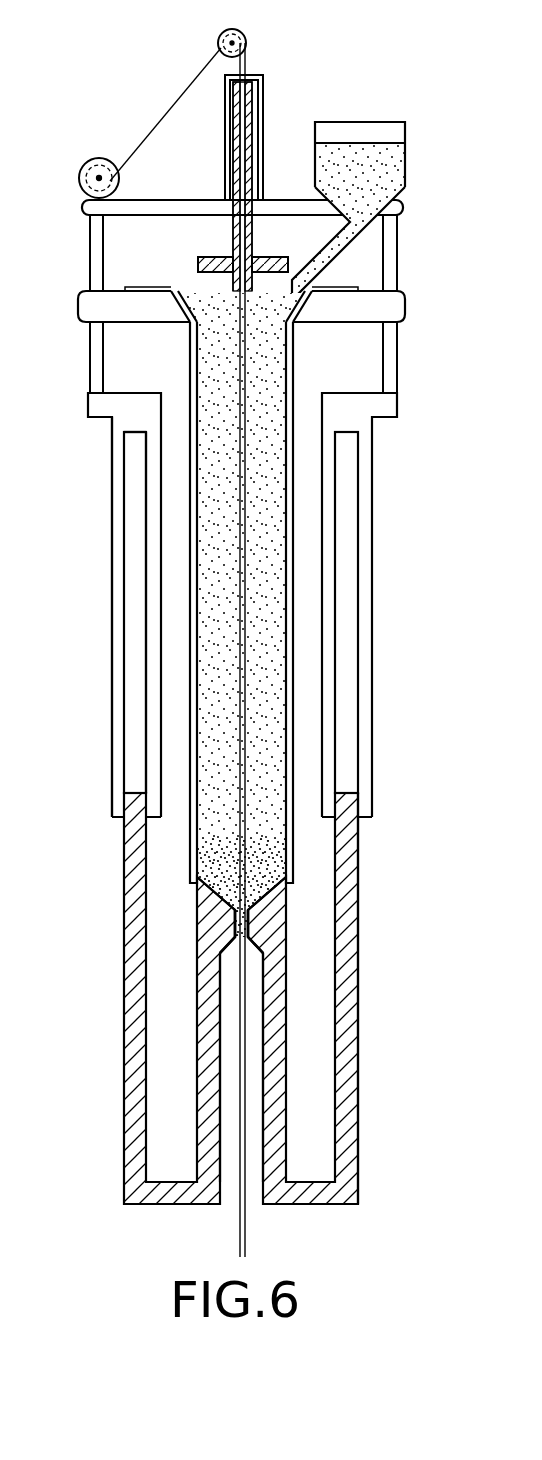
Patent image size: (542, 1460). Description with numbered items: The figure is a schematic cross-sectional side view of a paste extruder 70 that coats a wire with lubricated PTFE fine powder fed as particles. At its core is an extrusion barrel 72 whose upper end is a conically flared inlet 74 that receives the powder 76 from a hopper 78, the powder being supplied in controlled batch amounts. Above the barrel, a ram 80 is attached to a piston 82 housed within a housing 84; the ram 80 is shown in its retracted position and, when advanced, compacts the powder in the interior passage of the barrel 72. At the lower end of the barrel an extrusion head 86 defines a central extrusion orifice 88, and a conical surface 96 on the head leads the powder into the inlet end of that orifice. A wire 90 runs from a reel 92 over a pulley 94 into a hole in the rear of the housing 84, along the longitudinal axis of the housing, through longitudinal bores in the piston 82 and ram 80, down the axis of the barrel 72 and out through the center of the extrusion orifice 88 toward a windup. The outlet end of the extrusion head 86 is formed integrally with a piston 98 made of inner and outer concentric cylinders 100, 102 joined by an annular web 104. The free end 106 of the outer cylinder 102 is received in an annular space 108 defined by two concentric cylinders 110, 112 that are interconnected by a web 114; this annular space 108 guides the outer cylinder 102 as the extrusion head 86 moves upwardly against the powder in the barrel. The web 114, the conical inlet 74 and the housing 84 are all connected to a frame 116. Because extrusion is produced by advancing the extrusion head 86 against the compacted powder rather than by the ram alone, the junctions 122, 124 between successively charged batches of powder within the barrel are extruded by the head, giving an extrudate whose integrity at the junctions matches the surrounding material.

The paste extruder 70 is at (406, 579).
The extrusion barrel 72 is at (300, 716).
The conically flared inlet 74 is at (180, 310).
The powder 76 is at (280, 313).
The hopper 78 is at (407, 172).
The ram 80 is at (217, 257).
The piston 82 is at (251, 123).
The housing 84 is at (263, 76).
The extrusion head 86 is at (207, 915).
The extrusion orifice 88 is at (220, 953).
The wire 90 is at (239, 1233).
The reel 92 is at (103, 160).
The pulley 94 is at (227, 30).
The conical surface 96 is at (205, 896).
The piston 98 is at (364, 1136).
The inner cylinder 100 is at (290, 1022).
The outer cylinder 102 is at (358, 1047).
The annular web 104 is at (315, 1205).
The free end 106 is at (347, 797).
The annular space 108 is at (138, 655).
The cylinder 110 is at (112, 592).
The cylinder 112 is at (147, 537).
The web 114 is at (138, 434).
The frame 116 is at (397, 388).
The junction 122 is at (263, 833).
The junction 124 is at (270, 400).